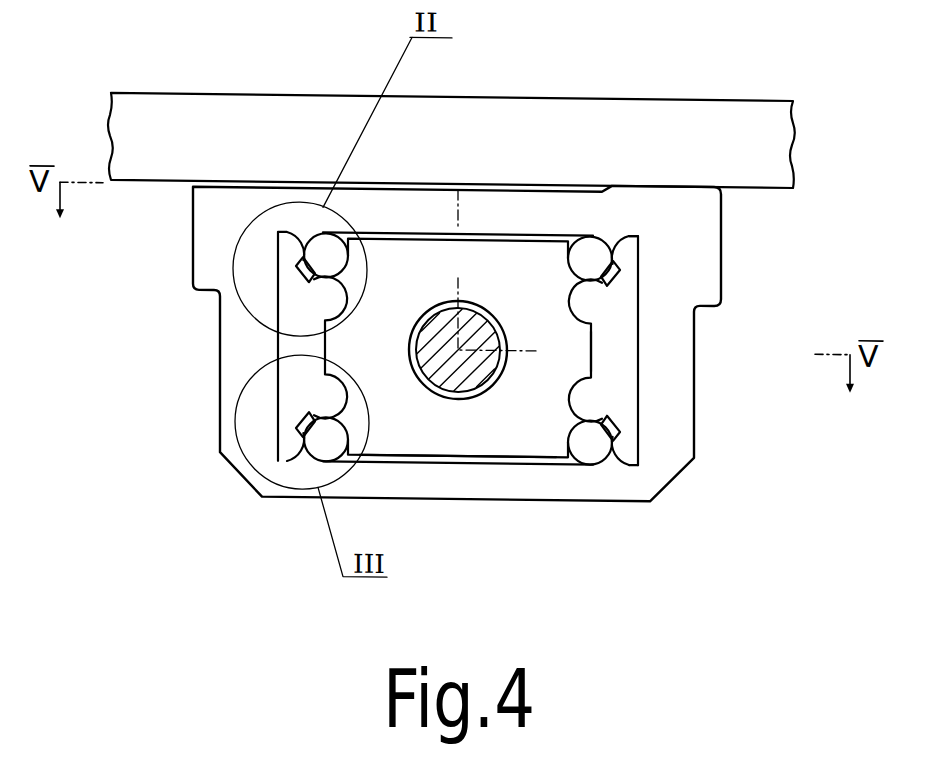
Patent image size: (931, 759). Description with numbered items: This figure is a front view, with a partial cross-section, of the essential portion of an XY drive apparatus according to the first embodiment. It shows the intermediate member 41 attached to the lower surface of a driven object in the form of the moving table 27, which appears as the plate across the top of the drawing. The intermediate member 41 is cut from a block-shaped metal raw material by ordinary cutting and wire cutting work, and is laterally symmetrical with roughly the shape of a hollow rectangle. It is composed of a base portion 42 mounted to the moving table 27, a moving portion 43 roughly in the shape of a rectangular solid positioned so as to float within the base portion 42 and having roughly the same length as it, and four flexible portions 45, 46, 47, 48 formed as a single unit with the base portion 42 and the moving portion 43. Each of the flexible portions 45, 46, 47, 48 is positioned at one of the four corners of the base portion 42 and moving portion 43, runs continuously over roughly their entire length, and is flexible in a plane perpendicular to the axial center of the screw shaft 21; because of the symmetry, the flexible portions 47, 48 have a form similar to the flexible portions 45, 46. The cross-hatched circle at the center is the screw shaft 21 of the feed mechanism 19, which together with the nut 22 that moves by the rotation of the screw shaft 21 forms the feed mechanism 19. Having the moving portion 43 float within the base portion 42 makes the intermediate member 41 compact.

The feed mechanism 19 is at (536, 457).
The screw shaft 21 is at (468, 386).
The nut 22 is at (510, 372).
The moving table 27 is at (698, 114).
The intermediate member 41 is at (735, 282).
The base portion 42 is at (685, 324).
The moving portion 43 is at (563, 339).
The flexible portion 45 is at (295, 257).
The flexible portion 46 is at (293, 438).
The flexible portion 47 is at (627, 266).
The flexible portion 48 is at (622, 442).